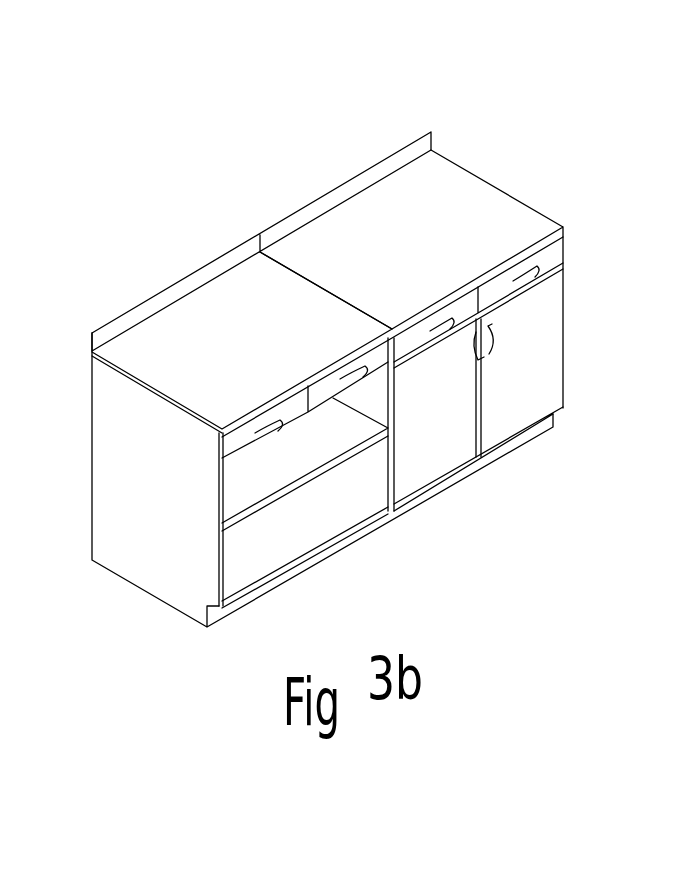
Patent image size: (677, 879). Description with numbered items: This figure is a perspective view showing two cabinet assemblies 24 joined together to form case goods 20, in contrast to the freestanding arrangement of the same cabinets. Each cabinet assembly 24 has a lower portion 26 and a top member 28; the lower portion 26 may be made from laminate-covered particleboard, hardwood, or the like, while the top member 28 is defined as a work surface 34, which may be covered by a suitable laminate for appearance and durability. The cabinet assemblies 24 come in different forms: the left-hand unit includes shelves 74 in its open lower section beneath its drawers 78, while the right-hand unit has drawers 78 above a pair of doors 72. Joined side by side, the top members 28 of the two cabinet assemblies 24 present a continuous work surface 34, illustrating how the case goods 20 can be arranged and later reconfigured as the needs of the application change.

The case goods 20 is at (543, 207).
The cabinet assembly 24 is at (200, 268).
The lower portion 26 is at (148, 587).
The top member 28 is at (483, 178).
The work surface 34 is at (257, 343).
The door 72 is at (567, 372).
The shelf 74 is at (334, 459).
The drawer 78 is at (560, 252).